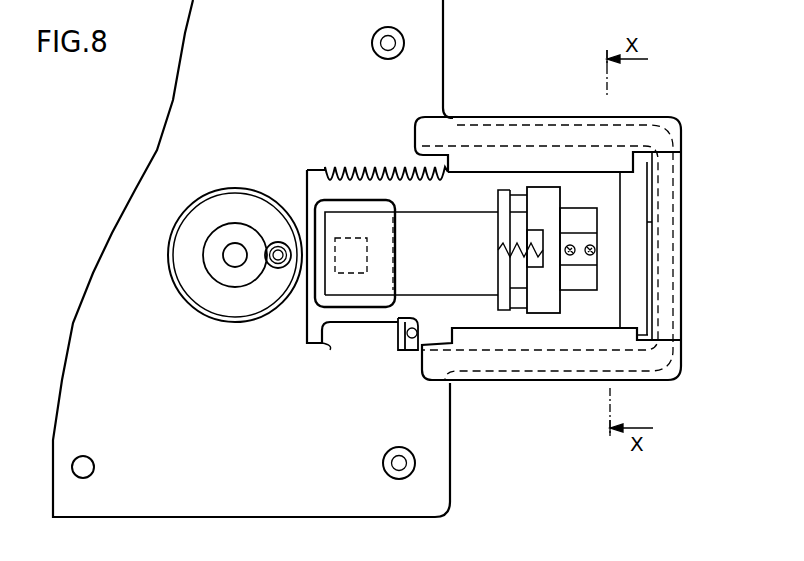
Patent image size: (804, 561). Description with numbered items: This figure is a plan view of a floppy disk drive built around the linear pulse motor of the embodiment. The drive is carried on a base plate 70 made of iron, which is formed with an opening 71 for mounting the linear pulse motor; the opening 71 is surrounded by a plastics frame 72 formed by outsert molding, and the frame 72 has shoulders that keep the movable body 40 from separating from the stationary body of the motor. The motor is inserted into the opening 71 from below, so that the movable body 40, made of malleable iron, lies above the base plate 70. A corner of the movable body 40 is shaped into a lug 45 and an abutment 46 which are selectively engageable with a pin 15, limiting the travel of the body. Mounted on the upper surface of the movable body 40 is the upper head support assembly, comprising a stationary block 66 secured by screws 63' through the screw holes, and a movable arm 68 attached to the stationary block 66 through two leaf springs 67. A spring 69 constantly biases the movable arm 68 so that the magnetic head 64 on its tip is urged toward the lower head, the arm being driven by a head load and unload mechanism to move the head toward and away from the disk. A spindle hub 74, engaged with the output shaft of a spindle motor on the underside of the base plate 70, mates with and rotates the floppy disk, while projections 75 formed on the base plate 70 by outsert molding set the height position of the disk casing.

The pin 15 is at (417, 350).
The movable body 40 is at (613, 290).
The lug 45 is at (318, 358).
The abutment 46 is at (398, 332).
The screws 63' is at (583, 236).
The magnetic head 64 is at (345, 260).
The stationary block 66 is at (578, 283).
The leaf springs 67 is at (518, 188).
The movable arm 68 is at (402, 255).
The spring 69 is at (500, 246).
The base plate 70 is at (437, 38).
The opening 71 is at (413, 157).
The plastics frame 72 is at (668, 143).
The spindle hub 74 is at (185, 267).
The projections 75 is at (372, 42).